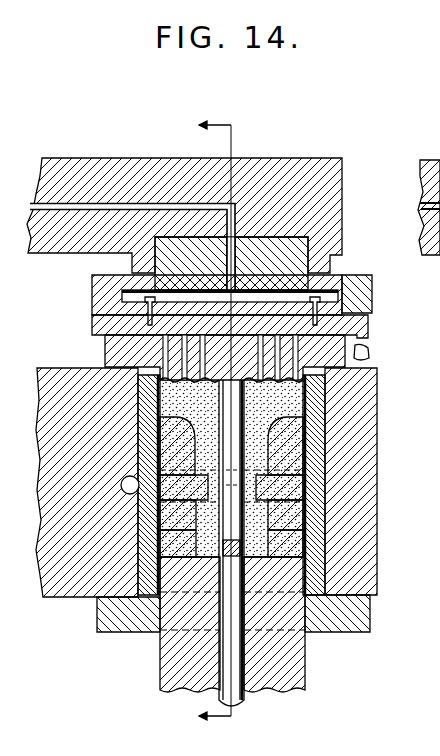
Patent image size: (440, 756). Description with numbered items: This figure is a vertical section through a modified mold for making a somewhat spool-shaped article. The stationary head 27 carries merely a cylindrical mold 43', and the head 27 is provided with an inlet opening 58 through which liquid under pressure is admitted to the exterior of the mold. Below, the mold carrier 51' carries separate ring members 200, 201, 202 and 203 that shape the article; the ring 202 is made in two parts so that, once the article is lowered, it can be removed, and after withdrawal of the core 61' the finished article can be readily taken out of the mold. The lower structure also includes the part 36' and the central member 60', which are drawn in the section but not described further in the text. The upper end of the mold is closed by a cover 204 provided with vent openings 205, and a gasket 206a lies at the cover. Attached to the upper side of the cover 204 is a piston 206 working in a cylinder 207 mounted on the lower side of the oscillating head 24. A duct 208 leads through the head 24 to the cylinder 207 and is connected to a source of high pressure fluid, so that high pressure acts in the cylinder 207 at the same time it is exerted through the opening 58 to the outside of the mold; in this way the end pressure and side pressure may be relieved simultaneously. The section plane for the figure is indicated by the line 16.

The oscillating head 24 is at (330, 170).
The duct 208 is at (123, 208).
The piston 206 is at (265, 322).
The gasket 206a is at (121, 302).
The cylinder 207 is at (373, 292).
The cover 204 is at (328, 336).
The vent openings 205 is at (360, 360).
The stationary head 27 is at (82, 590).
The cylindrical mold 43' is at (233, 468).
The ring member 203 is at (293, 438).
The ring member 202 is at (265, 493).
The ring member 201 is at (292, 515).
The ring member 200 is at (270, 548).
The clamp block 36' is at (225, 630).
The mold carrier 51' is at (257, 624).
The tube 60' is at (182, 543).
The core 61' is at (318, 504).
The inlet opening 58 is at (122, 480).
The section line 16- 16 is at (230, 425).